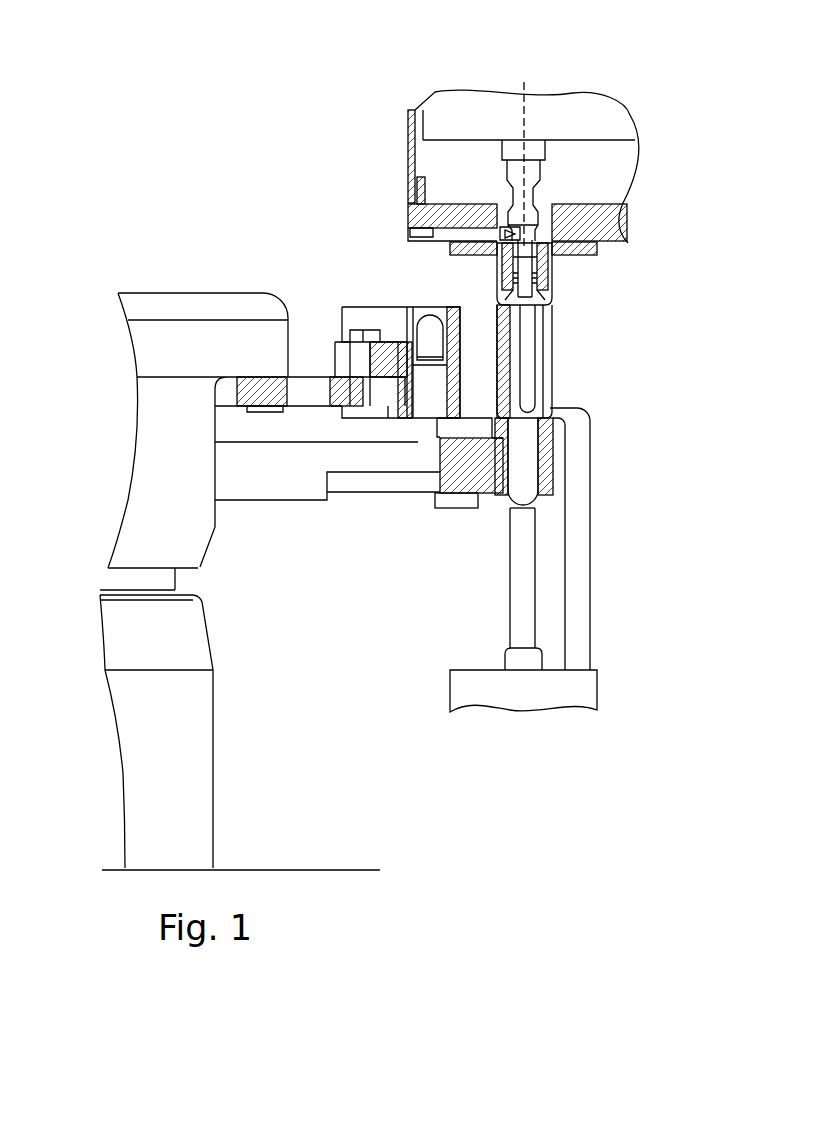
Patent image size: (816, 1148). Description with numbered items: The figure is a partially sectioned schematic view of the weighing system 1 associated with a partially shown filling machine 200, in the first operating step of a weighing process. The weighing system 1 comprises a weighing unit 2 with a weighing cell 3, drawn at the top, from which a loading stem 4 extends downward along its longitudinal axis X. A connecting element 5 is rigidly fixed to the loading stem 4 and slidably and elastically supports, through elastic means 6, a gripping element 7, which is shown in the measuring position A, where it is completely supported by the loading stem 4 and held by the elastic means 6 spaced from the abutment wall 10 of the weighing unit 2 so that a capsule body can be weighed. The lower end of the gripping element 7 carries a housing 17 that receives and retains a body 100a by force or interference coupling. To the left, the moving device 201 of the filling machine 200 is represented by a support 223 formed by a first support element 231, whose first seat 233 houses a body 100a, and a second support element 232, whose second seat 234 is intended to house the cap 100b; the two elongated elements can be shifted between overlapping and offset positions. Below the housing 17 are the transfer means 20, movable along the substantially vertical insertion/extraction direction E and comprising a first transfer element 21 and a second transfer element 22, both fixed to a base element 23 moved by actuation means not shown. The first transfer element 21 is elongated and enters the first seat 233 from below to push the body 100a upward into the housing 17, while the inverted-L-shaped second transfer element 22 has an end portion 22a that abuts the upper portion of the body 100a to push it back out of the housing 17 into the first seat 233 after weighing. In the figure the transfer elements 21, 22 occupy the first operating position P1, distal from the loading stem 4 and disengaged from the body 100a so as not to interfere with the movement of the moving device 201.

The weighing system 1 is at (660, 203).
The weighing unit 2 is at (403, 124).
The weighing cell 3 is at (482, 130).
The loading stem 4 is at (500, 175).
The connecting element 5 is at (497, 255).
The elastic means 6 is at (550, 278).
The gripping element 7 is at (502, 395).
The abutment wall 10 is at (580, 243).
The housing 17 is at (530, 345).
The transfer means 20 is at (545, 733).
The first transfer element 21 is at (522, 622).
The second transfer element 22 is at (575, 610).
The end portion 22a is at (540, 463).
The base element 23 is at (575, 702).
The body 100a is at (522, 485).
The cap 100b is at (433, 333).
The filling machine 200 is at (150, 275).
The moving device 201 is at (168, 520).
The support 223 is at (353, 607).
The first support element 231 is at (460, 458).
The second support element 232 is at (325, 397).
The first seat 233 is at (508, 470).
The second seat 234 is at (447, 382).
The longitudinal axis X is at (524, 82).
The measuring position A is at (563, 260).
The first operating position P1 is at (697, 327).
The insertion/extraction direction E is at (759, 417).